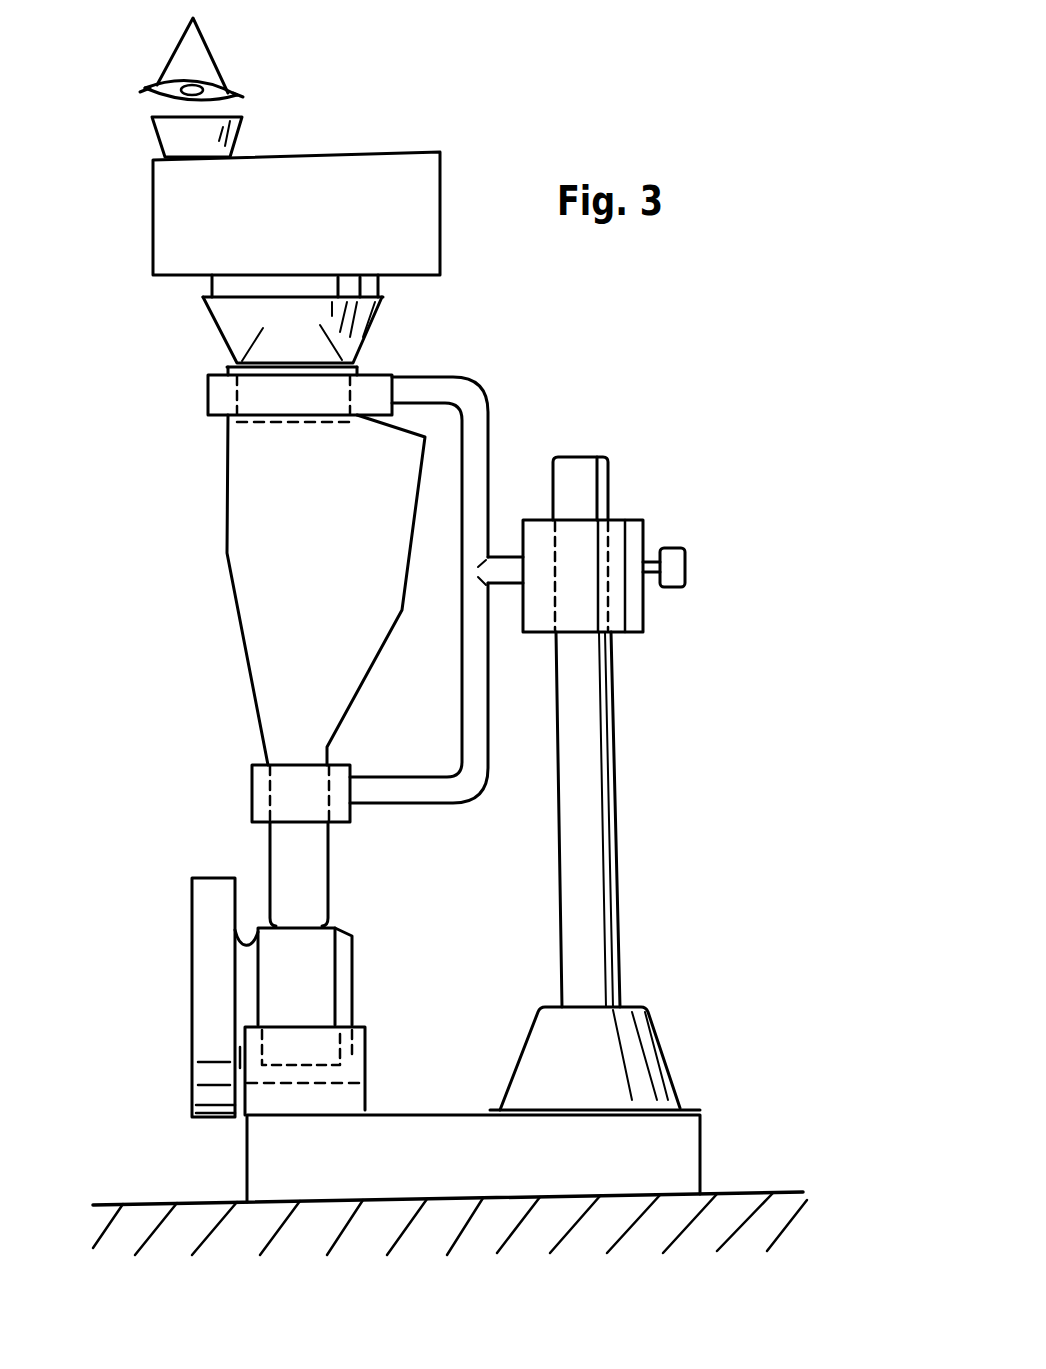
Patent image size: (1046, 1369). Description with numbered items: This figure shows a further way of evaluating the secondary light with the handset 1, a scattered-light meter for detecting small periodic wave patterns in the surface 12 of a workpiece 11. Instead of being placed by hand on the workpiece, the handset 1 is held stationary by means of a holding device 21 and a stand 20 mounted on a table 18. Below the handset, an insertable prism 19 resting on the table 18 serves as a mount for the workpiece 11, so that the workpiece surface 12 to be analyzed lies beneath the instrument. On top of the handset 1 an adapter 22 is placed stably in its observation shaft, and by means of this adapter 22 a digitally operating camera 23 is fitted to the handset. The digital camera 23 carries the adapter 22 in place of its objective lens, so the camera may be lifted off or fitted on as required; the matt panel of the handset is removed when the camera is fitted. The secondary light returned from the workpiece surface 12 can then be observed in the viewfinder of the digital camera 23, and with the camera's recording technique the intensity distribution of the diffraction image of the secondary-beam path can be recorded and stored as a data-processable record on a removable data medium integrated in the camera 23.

The handset 1 is at (318, 607).
The workpiece 11 is at (196, 996).
The workpiece surface 12 is at (318, 990).
The table 18 is at (740, 1184).
The insertable prism 19 is at (352, 1067).
The stand 20 is at (592, 793).
The holding device 21 is at (427, 792).
The adapter 22 is at (367, 336).
The digital camera 23 is at (357, 234).